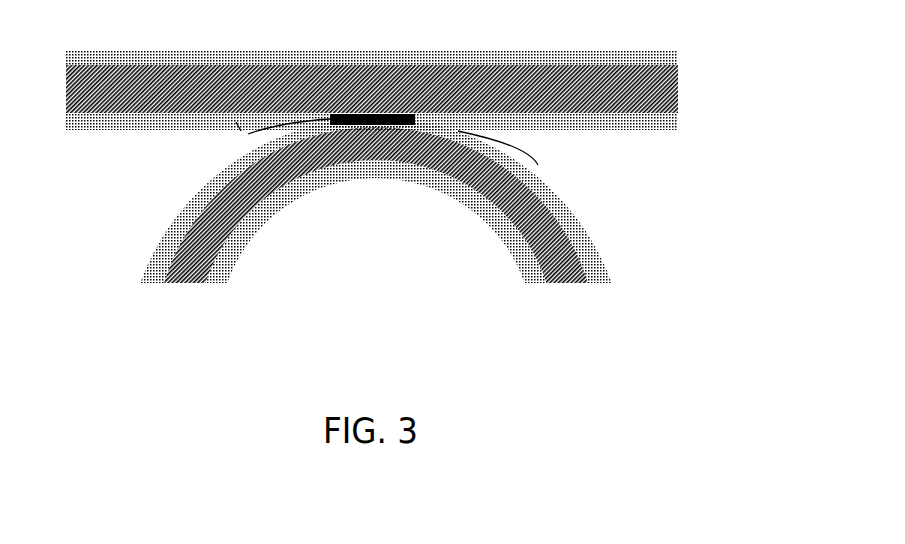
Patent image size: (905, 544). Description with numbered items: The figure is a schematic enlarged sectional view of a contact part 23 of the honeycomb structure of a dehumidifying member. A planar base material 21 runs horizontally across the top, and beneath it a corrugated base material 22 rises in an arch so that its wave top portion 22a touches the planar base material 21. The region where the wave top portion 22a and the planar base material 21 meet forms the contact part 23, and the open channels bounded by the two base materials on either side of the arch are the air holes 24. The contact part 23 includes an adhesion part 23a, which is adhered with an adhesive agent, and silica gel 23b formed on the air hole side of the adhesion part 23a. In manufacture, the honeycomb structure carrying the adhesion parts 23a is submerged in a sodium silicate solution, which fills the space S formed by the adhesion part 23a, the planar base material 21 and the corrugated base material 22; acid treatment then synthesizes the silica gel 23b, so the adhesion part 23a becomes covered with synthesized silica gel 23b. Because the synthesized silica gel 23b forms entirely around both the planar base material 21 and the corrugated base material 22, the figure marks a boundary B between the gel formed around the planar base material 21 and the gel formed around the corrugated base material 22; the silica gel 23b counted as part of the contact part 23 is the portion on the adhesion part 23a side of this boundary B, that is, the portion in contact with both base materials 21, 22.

The planar base material 21 is at (678, 85).
The corrugated base material 22 is at (575, 283).
The wave top portion 22a is at (375, 158).
The contact part 23 is at (372, 119).
The adhesion part 23a is at (248, 134).
The silica gel 23b is at (478, 50).
The air hole 24 is at (125, 199).
The boundary B is at (241, 130).
The space S is at (538, 165).